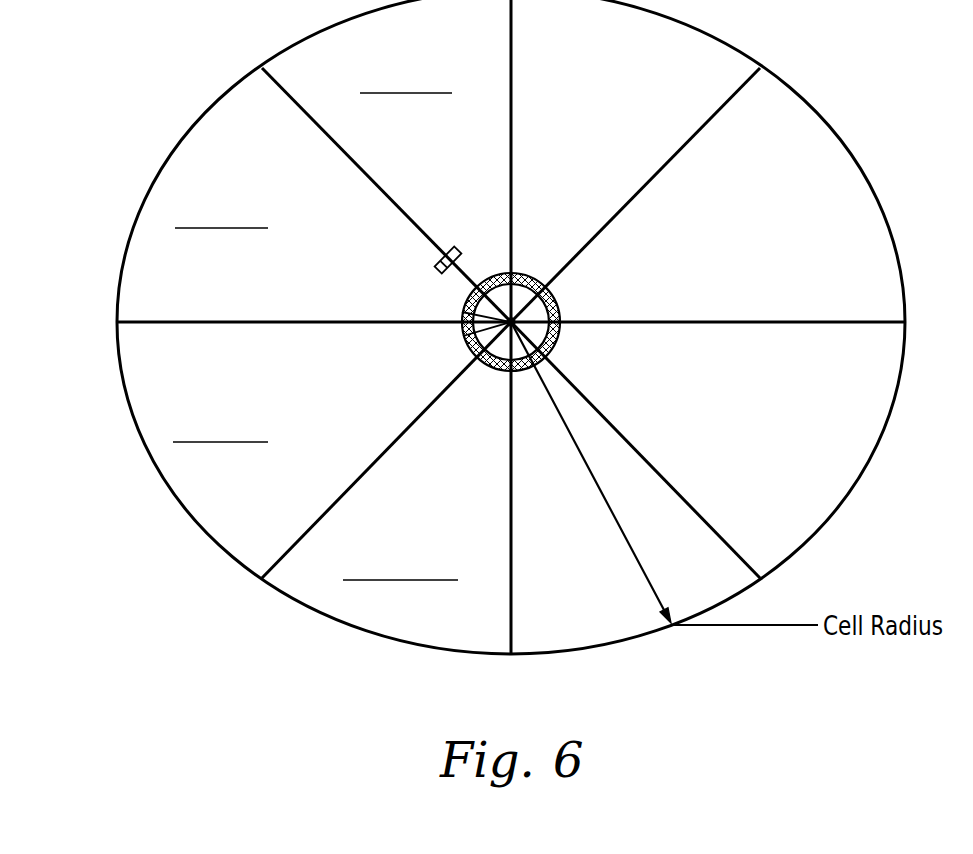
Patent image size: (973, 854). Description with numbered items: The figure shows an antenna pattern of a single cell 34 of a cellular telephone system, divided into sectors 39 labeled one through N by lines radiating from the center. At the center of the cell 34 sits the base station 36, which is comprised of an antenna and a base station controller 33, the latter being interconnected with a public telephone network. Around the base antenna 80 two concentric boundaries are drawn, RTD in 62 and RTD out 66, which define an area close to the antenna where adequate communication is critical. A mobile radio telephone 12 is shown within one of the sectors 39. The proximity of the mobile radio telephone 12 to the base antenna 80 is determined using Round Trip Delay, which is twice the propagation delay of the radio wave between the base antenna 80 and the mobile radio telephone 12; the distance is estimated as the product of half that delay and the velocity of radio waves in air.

The cell 34 is at (845, 213).
The sectors 39 is at (163, 207).
The mobile radio telephone 12 is at (436, 262).
The base station controller 33 is at (470, 338).
The base station 36 is at (502, 341).
The base antenna 80 is at (558, 357).
The RTD out 66 is at (543, 265).
The RTD in 62 is at (559, 302).